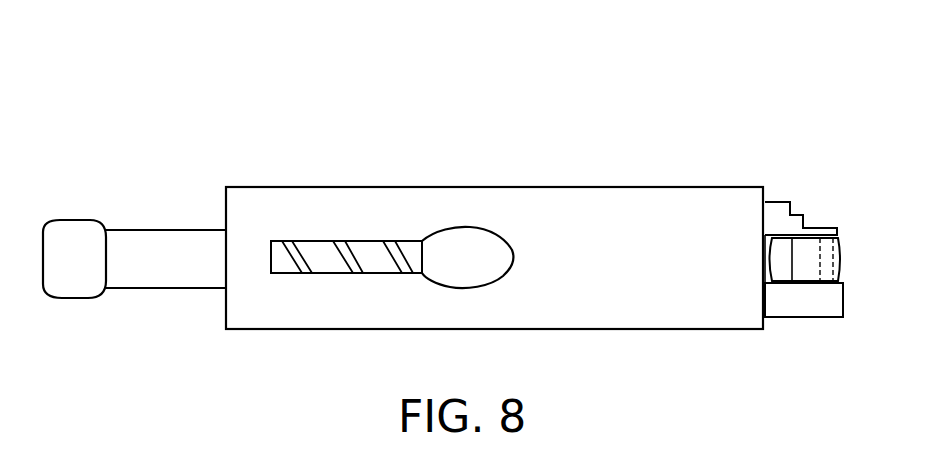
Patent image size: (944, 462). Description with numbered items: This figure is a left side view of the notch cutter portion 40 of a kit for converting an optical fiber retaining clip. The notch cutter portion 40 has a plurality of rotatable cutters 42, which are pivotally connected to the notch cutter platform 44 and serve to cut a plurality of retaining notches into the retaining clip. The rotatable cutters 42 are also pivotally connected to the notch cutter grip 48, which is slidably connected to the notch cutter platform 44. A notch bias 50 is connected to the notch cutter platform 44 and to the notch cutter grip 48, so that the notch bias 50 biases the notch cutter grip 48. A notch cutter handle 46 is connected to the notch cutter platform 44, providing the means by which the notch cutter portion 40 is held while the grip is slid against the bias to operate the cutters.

The notch cutter portion 40 is at (470, 110).
The rotatable cutters 42 is at (783, 272).
The notch cutter platform 44 is at (763, 190).
The notch cutter handle 46 is at (63, 282).
The notch cutter grip 48 is at (490, 267).
The notch bias 50 is at (302, 260).